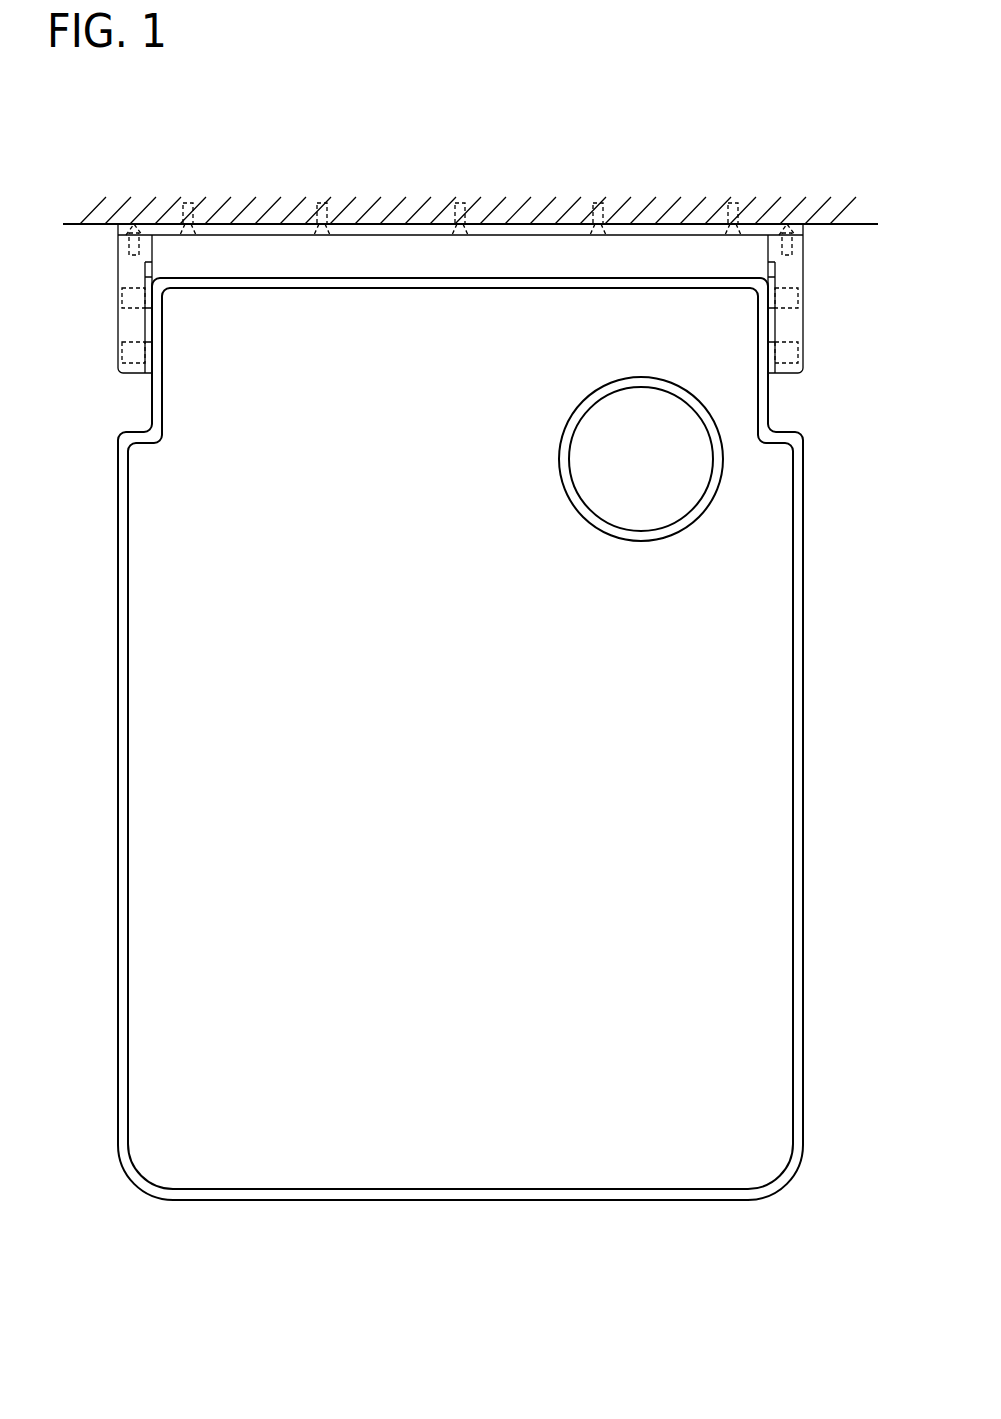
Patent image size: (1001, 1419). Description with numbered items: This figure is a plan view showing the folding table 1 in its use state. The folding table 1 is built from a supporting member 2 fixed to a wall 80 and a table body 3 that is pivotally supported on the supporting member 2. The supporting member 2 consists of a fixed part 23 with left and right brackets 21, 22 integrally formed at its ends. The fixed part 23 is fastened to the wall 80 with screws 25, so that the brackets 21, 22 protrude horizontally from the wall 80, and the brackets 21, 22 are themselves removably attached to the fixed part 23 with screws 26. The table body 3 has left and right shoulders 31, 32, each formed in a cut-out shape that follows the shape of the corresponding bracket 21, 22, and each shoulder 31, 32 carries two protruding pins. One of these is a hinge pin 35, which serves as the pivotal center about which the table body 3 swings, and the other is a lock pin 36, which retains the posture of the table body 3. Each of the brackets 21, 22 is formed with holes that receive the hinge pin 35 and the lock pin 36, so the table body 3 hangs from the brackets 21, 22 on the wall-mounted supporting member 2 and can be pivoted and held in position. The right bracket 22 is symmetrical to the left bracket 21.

The folding table 1 is at (461, 802).
The supporting member 2 is at (468, 242).
The table body 3 is at (756, 668).
The bracket 21 is at (127, 328).
The bracket 22 is at (795, 328).
The fixed part 23 is at (661, 232).
The screws 25 is at (321, 205).
The screws 26 is at (126, 244).
The shoulder 31 is at (151, 405).
The shoulder 32 is at (769, 405).
The hinge pin 35 is at (124, 363).
The lock pin 36 is at (122, 288).
The wall 80 is at (536, 200).